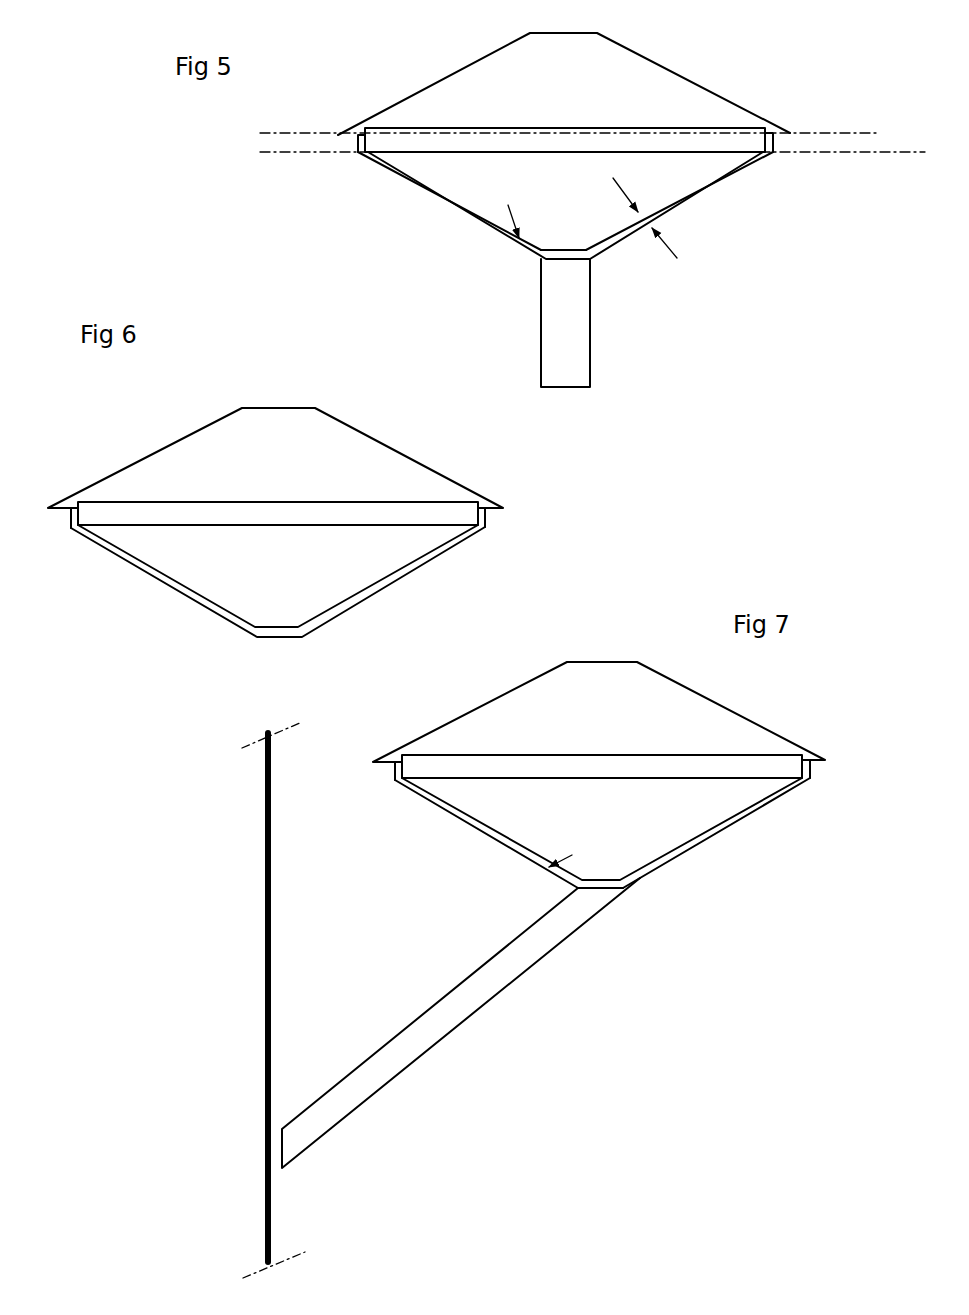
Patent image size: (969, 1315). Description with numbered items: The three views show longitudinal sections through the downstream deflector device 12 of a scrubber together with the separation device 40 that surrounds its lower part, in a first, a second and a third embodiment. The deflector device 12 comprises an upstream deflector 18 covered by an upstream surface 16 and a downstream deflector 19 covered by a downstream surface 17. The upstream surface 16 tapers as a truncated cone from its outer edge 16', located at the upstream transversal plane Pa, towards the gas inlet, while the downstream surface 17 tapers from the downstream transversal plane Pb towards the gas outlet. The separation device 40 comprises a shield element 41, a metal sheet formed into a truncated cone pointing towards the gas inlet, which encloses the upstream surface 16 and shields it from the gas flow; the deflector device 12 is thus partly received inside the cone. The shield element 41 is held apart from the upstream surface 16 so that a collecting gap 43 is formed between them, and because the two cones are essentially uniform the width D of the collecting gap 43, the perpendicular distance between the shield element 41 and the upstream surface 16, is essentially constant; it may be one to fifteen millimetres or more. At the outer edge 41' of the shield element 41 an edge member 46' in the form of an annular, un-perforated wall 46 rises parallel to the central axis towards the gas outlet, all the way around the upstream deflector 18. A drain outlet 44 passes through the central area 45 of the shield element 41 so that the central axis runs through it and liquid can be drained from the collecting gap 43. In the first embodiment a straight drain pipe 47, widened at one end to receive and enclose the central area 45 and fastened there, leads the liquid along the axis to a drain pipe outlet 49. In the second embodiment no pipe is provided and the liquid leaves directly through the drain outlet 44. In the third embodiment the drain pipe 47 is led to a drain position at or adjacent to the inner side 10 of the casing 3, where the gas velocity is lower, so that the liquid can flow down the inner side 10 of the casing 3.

In FIG. 5, the downstream deflector device 12 is at (440, 70).
In FIG. 6, the downstream deflector device 12 is at (147, 440).
In FIG. 7, the downstream deflector device 12 is at (749, 707).
In FIG. 5, the downstream surface 17 is at (403, 97).
In FIG. 6, the downstream surface 17 is at (418, 458).
In FIG. 7, the downstream surface 17 is at (459, 712).
In FIG. 5, the downstream deflector 19 is at (460, 103).
In FIG. 6, the downstream deflector 19 is at (387, 488).
In FIG. 7, the downstream deflector 19 is at (465, 738).
In FIG. 5, the wall 46 is at (324, 139).
In FIG. 6, the wall 46 is at (48, 552).
In FIG. 7, the wall 46 is at (363, 790).
In FIG. 5, the edge member 46' is at (811, 124).
In FIG. 6, the edge member 46' is at (534, 510).
In FIG. 7, the edge member 46' is at (847, 793).
In FIG. 5, the separation device 40 is at (356, 155).
In FIG. 6, the separation device 40 is at (473, 537).
In FIG. 7, the separation device 40 is at (419, 803).
In FIG. 5, the shield element 41 is at (523, 205).
In FIG. 6, the shield element 41 is at (332, 576).
In FIG. 7, the shield element 41 is at (563, 829).
In FIG. 5, the outer edge of the shield element 41' is at (811, 168).
In FIG. 5, the upstream deflector 18 is at (512, 232).
In FIG. 5, the central area 45 is at (536, 228).
In FIG. 6, the central area 45 is at (234, 625).
In FIG. 7, the central area 45 is at (577, 888).
In FIG. 5, the drain pipe 47 is at (550, 290).
In FIG. 7, the drain pipe 47 is at (490, 968).
In FIG. 5, the drain pipe outlet 49 is at (565, 387).
In FIG. 7, the drain pipe outlet 49 is at (282, 1150).
In FIG. 5, the collecting gap 43 is at (690, 202).
In FIG. 6, the collecting gap 43 is at (408, 569).
In FIG. 7, the collecting gap 43 is at (723, 828).
In FIG. 5, the drain outlet 44 is at (565, 262).
In FIG. 6, the drain outlet 44 is at (278, 635).
In FIG. 7, the drain outlet 44 is at (600, 888).
In FIG. 5, the upstream surface 16 is at (607, 201).
In FIG. 7, the upstream surface 16 is at (623, 833).
In FIG. 5, the outer edge of the upstream surface 16' is at (726, 201).
In FIG. 5, the width of the collecting gap D is at (675, 238).
In FIG. 5, the upstream transversal plane Pa is at (855, 152).
In FIG. 5, the downstream transversal plane Pb is at (860, 133).
In FIG. 7, the casing 3 is at (270, 980).
In FIG. 7, the inner side of the casing 10 is at (270, 1055).